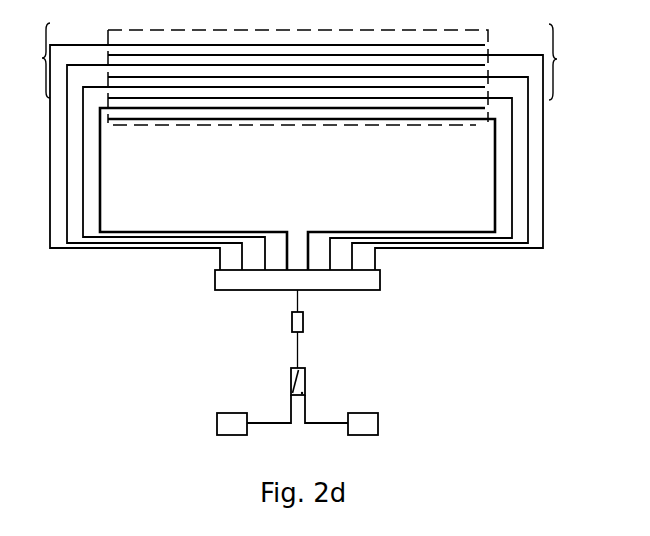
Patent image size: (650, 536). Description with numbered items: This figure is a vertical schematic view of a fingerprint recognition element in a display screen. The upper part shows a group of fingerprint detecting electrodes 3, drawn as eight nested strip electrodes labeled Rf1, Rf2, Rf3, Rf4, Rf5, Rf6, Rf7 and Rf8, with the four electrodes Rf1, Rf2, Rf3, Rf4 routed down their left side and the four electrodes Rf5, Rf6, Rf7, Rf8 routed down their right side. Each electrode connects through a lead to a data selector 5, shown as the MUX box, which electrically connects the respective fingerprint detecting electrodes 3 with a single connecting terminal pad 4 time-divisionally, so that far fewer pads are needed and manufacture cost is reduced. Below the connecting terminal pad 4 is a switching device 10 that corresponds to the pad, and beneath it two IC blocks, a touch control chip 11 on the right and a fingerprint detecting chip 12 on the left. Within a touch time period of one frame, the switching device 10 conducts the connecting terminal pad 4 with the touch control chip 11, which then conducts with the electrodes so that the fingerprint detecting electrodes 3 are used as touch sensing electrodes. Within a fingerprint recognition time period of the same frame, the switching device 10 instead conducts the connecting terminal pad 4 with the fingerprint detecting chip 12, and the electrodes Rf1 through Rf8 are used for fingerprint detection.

The sensing electrode line 1 Rf1 is at (111, 44).
The sensing electrode line 2 Rf2 is at (111, 65).
The sensing electrode line 3 Rf3 is at (111, 87).
The sensing electrode line 4 Rf4 is at (108, 108).
The sensing electrode line 5 Rf5 is at (485, 53).
The sensing electrode line 6 Rf6 is at (484, 75).
The sensing electrode line 7 Rf7 is at (484, 96).
The sensing electrode line 8 Rf8 is at (482, 118).
The fingerprint detecting electrode 3 is at (299, 61).
The data selector 5 is at (380, 277).
The connecting terminal pad 4 is at (303, 327).
The switching device 10 is at (305, 381).
The touch control chip 11 is at (378, 423).
The fingerprint detecting chip 12 is at (217, 423).